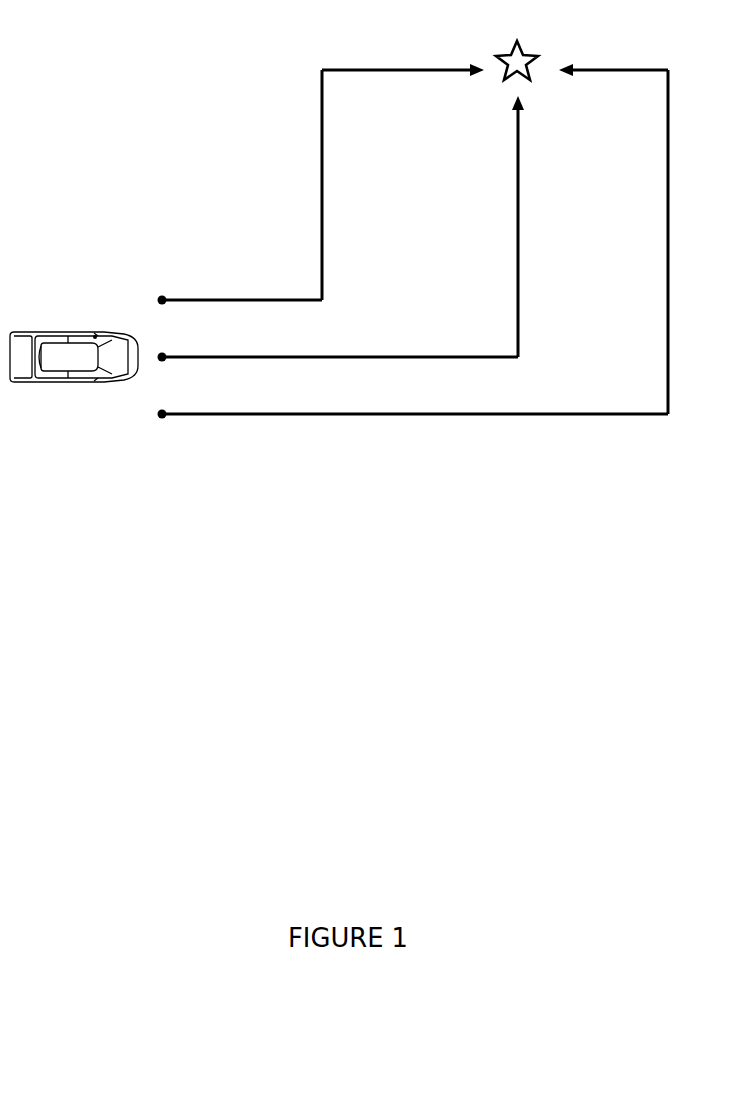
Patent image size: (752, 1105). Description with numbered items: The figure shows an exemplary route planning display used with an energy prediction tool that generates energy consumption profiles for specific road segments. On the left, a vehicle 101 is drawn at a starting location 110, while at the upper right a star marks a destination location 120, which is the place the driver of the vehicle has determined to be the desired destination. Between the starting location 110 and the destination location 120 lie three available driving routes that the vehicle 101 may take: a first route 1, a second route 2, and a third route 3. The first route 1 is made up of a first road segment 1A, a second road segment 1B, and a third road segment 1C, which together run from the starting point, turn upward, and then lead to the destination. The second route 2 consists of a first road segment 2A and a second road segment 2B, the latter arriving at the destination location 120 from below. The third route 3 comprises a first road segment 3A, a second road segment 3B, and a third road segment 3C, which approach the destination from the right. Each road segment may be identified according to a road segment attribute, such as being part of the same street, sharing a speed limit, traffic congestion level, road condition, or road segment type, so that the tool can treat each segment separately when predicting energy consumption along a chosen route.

The vehicle 101 is at (95, 337).
The starting location 110 is at (74, 369).
The destination location 120 is at (511, 55).
The first route 1 is at (157, 300).
The first road segment 1A is at (242, 288).
The second road segment 1B is at (309, 185).
The third road segment 1C is at (403, 62).
The second route 2 is at (157, 357).
The first road segment 2A is at (340, 346).
The second road segment 2B is at (509, 226).
The third route 3 is at (157, 414).
The first road segment 3A is at (415, 403).
The second road segment 3B is at (654, 242).
The third road segment 3C is at (613, 62).